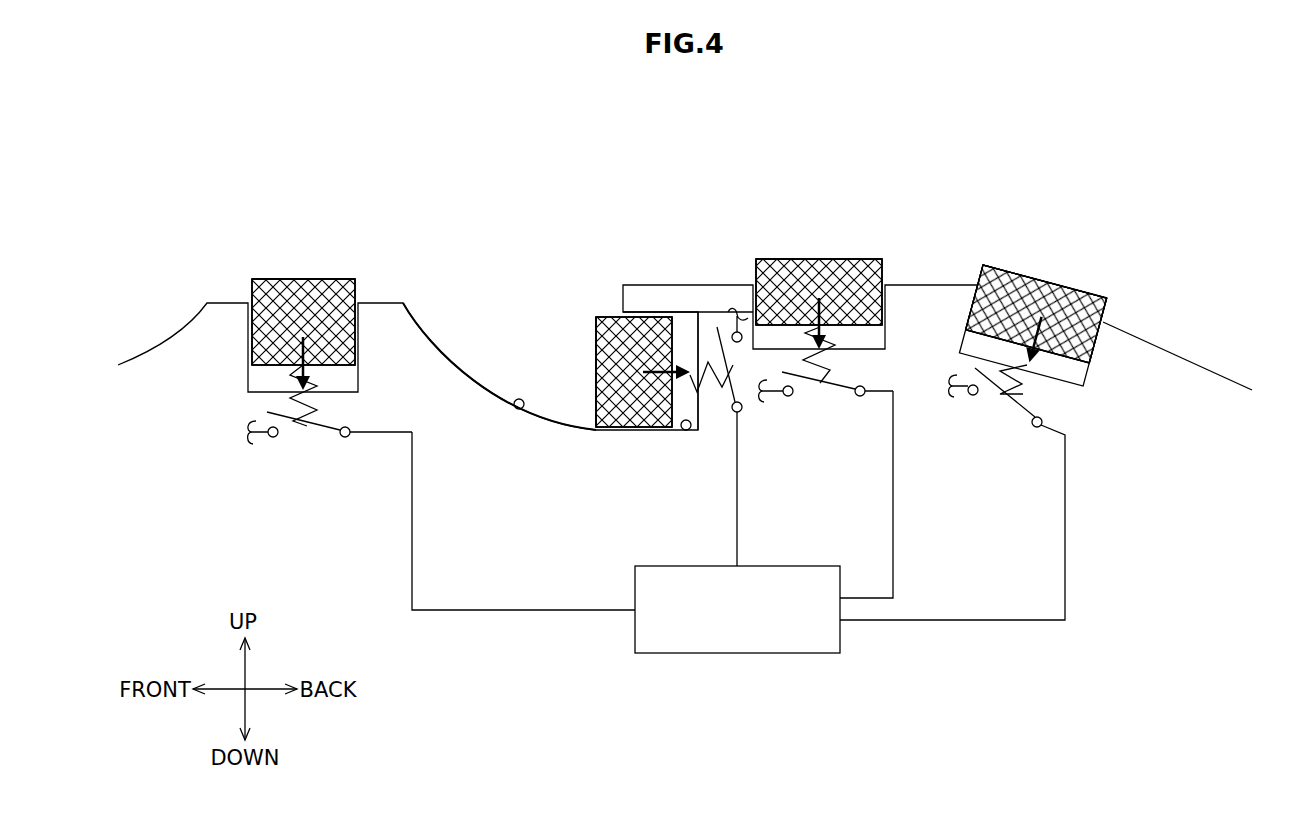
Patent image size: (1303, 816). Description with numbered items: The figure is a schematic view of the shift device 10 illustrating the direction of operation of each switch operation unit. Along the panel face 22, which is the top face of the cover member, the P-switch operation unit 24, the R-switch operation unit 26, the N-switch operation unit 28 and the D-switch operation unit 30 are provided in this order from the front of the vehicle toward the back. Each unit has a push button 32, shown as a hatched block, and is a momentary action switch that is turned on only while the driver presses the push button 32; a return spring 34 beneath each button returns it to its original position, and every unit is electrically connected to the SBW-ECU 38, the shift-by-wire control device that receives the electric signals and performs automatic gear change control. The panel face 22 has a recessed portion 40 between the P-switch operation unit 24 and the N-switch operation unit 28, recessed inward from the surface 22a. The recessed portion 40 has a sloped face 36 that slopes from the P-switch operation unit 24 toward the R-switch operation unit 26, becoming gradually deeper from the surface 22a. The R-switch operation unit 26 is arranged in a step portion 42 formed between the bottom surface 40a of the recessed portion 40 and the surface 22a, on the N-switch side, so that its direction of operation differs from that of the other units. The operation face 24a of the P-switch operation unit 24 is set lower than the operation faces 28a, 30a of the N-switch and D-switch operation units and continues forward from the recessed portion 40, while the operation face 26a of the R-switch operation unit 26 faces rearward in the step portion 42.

The shift device 10 is at (685, 414).
The panel face 22 is at (924, 285).
The surface 22a is at (650, 285).
The P-switch operation unit 24 is at (283, 272).
The operation face 24a is at (303, 279).
The R-switch operation unit 26 is at (585, 322).
The operation face 26a is at (596, 380).
The N-switch operation unit 28 is at (847, 250).
The operation face 28a is at (808, 259).
The D-switch operation unit 30 is at (1087, 275).
The operation face 30a is at (1043, 282).
The push button 32 is at (334, 279).
The return spring 34 is at (313, 403).
The sloped face 36 is at (514, 408).
The SBW-ECU 38 is at (782, 653).
The recessed portion 40 is at (482, 360).
The bottom surface 40a is at (686, 431).
The step portion 42 is at (688, 325).